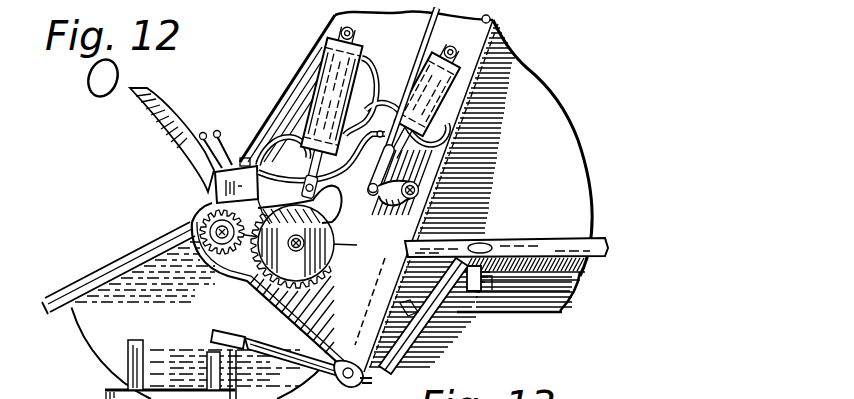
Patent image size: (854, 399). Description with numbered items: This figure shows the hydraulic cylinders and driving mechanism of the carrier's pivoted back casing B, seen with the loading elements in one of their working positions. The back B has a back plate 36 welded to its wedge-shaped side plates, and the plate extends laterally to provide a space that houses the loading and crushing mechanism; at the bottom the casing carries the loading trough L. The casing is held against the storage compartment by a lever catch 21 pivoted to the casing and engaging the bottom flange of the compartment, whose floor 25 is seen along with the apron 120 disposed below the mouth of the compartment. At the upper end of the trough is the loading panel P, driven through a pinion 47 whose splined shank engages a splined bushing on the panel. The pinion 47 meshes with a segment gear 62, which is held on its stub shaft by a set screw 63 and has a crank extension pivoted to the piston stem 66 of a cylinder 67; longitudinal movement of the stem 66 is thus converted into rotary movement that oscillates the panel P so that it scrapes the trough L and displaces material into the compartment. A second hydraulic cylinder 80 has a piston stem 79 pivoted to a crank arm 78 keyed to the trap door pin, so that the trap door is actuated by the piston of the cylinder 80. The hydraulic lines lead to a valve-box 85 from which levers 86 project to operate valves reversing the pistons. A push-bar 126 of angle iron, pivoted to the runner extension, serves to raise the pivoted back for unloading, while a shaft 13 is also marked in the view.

The loading trough L is at (97, 354).
The loading panel P is at (182, 114).
The back casing B is at (416, 191).
The back plate 36 is at (304, 62).
The levers 86 is at (218, 131).
The valve-box 85 is at (215, 184).
The pinion 47 is at (203, 212).
The shaft 13 is at (196, 231).
The set screw 63 is at (313, 195).
The segment gear 62 is at (322, 258).
The piston stem 66 is at (318, 150).
The cylinder 67 is at (345, 55).
The hydraulic cylinder 80 is at (423, 93).
The piston stem 79 is at (399, 183).
The crank arm 78 is at (396, 176).
The lever catch 21 is at (262, 342).
The push-bars 126 is at (543, 231).
The floor 25 is at (586, 268).
The apron 120 is at (426, 322).